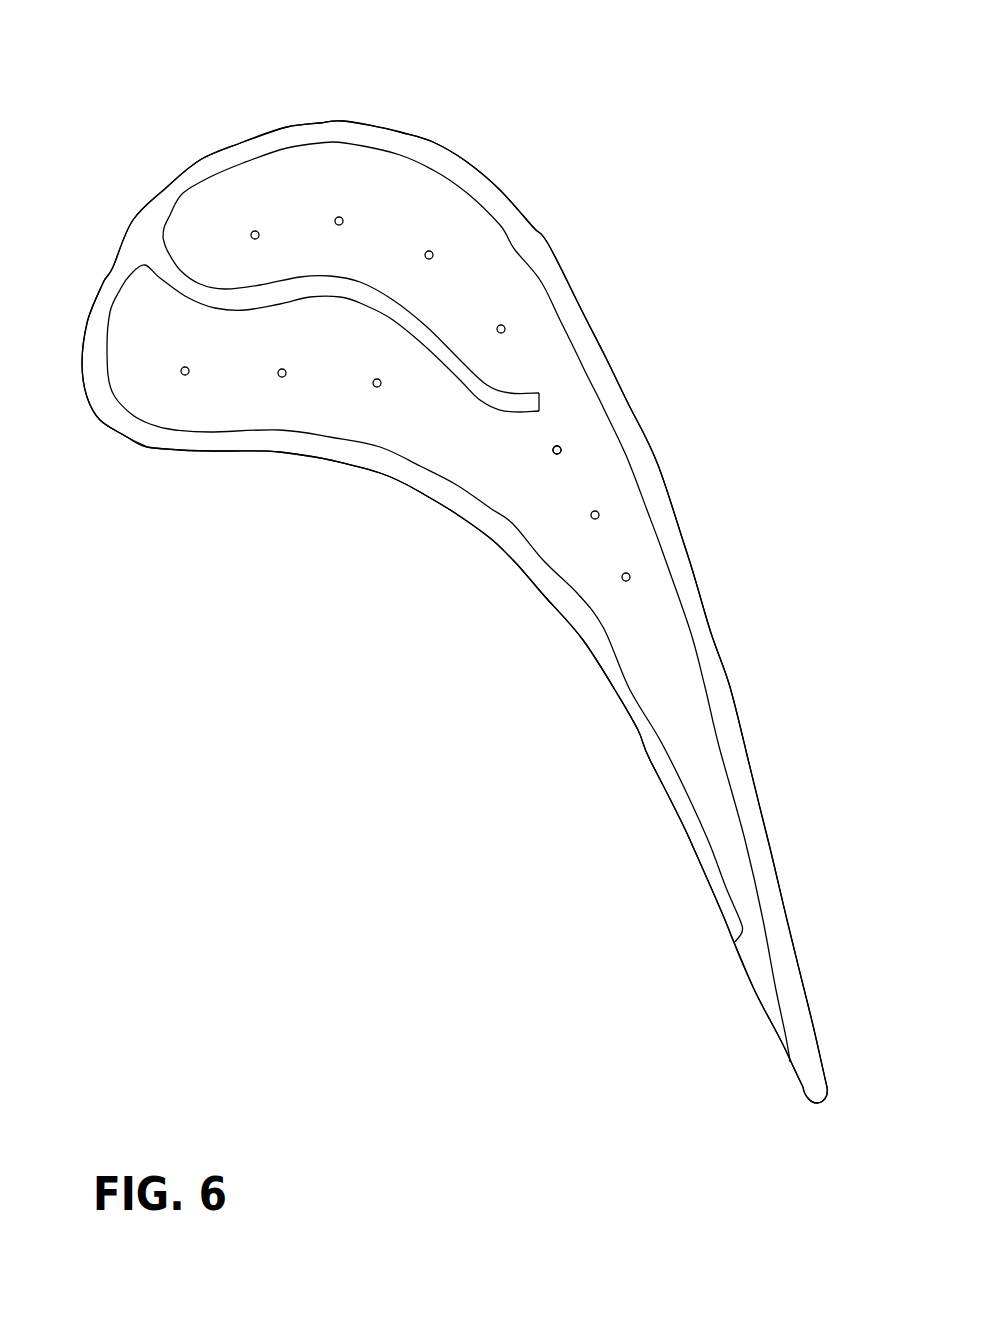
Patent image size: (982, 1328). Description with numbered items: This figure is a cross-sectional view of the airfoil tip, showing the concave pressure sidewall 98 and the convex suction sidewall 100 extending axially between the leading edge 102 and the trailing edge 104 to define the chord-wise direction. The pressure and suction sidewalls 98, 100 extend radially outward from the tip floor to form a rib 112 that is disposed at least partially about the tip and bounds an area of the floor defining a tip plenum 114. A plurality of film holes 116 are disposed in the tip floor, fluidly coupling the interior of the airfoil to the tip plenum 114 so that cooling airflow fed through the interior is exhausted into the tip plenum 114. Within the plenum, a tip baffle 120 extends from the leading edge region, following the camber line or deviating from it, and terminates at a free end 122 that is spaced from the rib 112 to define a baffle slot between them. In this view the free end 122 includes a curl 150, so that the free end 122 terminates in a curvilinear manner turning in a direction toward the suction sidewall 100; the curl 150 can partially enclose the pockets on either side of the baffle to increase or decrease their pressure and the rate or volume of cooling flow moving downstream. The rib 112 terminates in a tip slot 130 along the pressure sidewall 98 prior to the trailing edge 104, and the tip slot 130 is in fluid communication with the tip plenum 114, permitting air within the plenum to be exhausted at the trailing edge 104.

The pressure sidewall 98 is at (549, 596).
The suction sidewall 100 is at (545, 237).
The leading edge 102 is at (90, 408).
The trailing edge 104 is at (818, 1104).
The rib 112 is at (417, 148).
The tip plenum 114 is at (643, 615).
The film holes 116 is at (186, 376).
The tip baffle 120 is at (302, 288).
The free end 122 is at (540, 400).
The tip slot 130 is at (751, 984).
The curl 150 is at (534, 418).